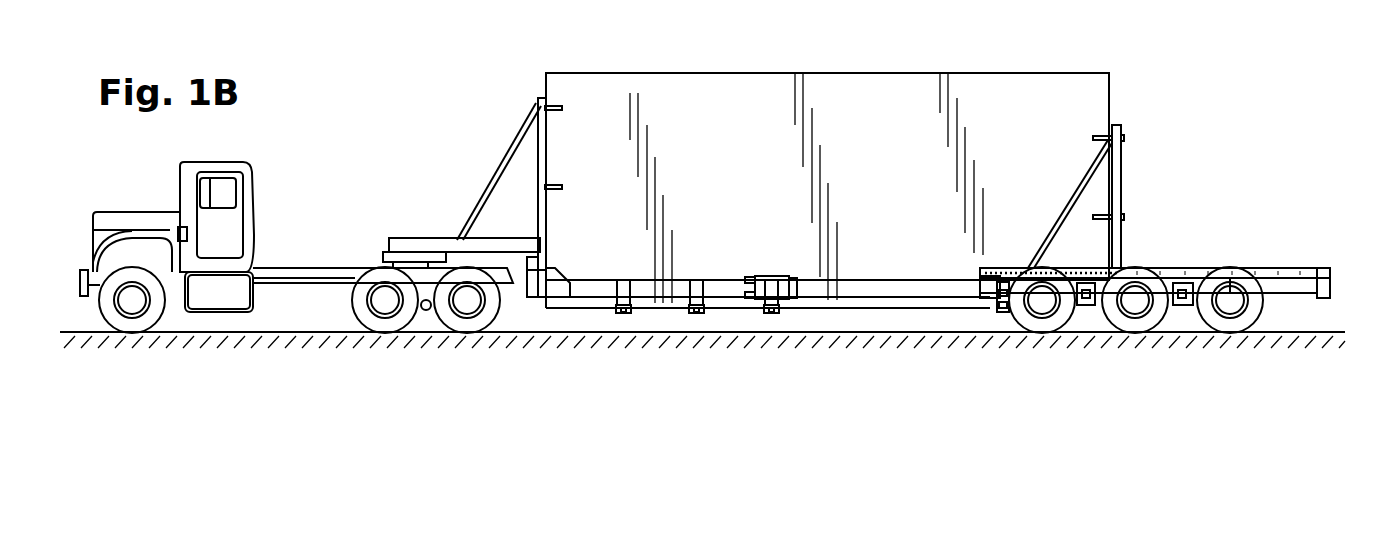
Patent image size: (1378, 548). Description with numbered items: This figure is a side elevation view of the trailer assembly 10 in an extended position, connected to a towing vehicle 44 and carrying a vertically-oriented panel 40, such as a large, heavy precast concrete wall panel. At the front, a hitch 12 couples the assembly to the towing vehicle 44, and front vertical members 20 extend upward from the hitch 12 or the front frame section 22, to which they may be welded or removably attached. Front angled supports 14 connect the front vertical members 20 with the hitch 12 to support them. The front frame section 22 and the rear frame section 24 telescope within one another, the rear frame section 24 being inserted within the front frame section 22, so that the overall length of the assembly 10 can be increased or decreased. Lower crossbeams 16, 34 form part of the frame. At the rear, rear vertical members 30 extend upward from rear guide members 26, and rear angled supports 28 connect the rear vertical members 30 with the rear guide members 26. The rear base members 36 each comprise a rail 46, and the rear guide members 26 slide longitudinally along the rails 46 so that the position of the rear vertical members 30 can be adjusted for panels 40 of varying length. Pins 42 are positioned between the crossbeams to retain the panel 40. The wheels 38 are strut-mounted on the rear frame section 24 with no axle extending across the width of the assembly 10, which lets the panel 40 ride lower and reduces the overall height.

The trailer assembly 10 is at (378, 84).
The hitch 12 is at (430, 238).
The front angled supports 14 is at (500, 163).
The lower crossbeams 16 is at (695, 313).
The front vertical members 20 is at (537, 138).
The front frame section 22 is at (645, 293).
The rear frame section 24 is at (893, 287).
The rear guide members 26 is at (1090, 268).
The rear angled supports 28 is at (1082, 183).
The rear vertical members 30 is at (1121, 165).
The lower crossbeams 34 is at (1000, 313).
The rear base members 36 is at (1281, 285).
The wheels 38 is at (1133, 322).
The panel 40 is at (840, 73).
The pins 42 is at (558, 185).
The towing vehicle 44 is at (216, 162).
The rail 46 is at (1312, 268).